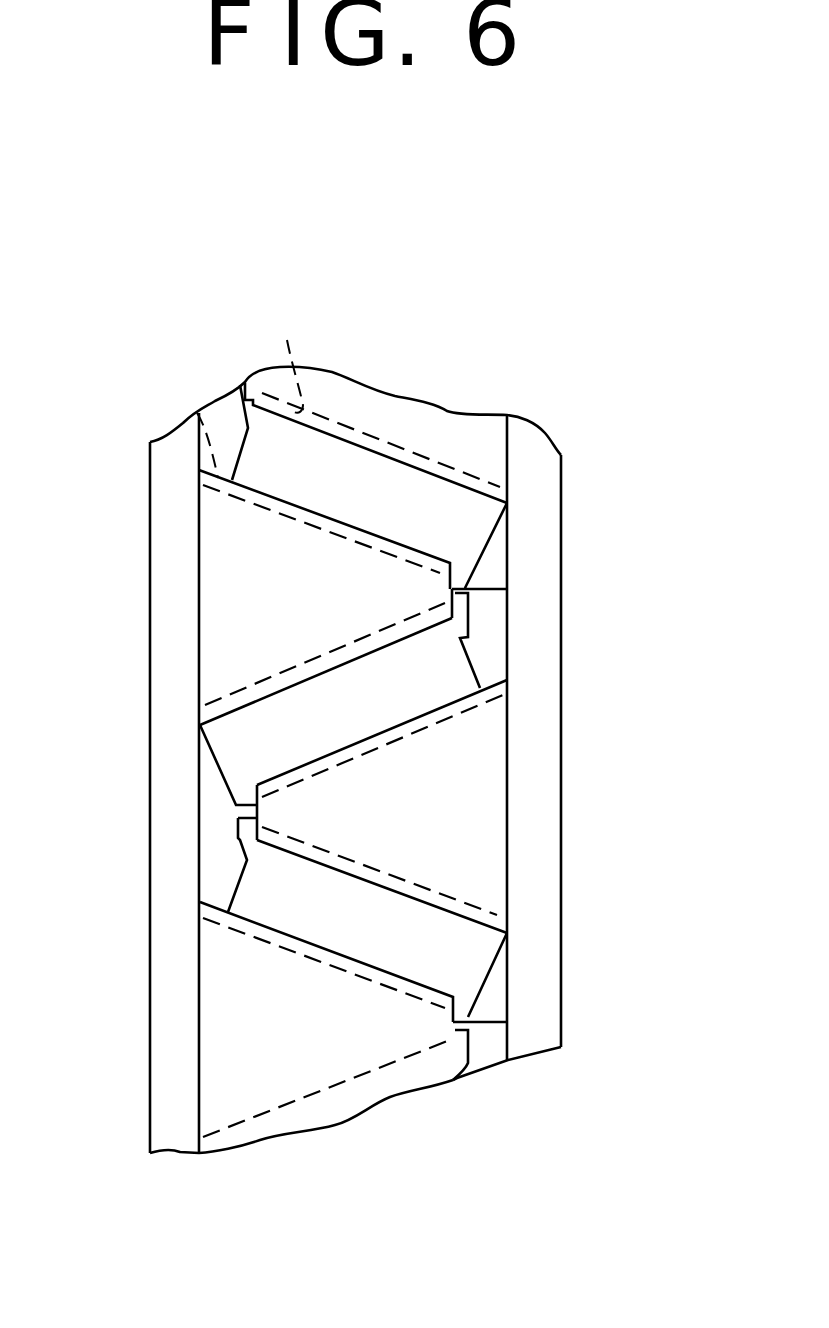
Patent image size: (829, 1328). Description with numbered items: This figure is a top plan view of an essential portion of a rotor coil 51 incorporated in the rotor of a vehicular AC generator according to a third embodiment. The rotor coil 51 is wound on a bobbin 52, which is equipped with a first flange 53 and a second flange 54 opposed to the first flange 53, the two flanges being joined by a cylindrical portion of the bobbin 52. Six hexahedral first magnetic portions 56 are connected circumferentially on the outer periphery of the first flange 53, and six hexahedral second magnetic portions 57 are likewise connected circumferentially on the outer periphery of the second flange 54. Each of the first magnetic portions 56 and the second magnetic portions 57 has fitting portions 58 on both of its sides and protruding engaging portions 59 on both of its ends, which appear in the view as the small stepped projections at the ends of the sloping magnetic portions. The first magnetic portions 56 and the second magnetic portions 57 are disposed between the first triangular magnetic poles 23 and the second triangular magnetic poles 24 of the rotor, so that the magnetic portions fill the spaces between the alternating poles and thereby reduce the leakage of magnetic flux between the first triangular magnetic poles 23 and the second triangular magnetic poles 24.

The rotor coil 51 is at (583, 663).
The bobbin 52 is at (152, 723).
The first flange 53 is at (560, 843).
The second flange 54 is at (160, 542).
The first triangular magnetic poles 23 is at (470, 760).
The second triangular magnetic poles 24 is at (227, 610).
The first magnetic portions 56 is at (435, 500).
The second magnetic portions 57 is at (250, 752).
The fitting portions 58 is at (262, 680).
The protruding engaging portions 59 is at (245, 382).